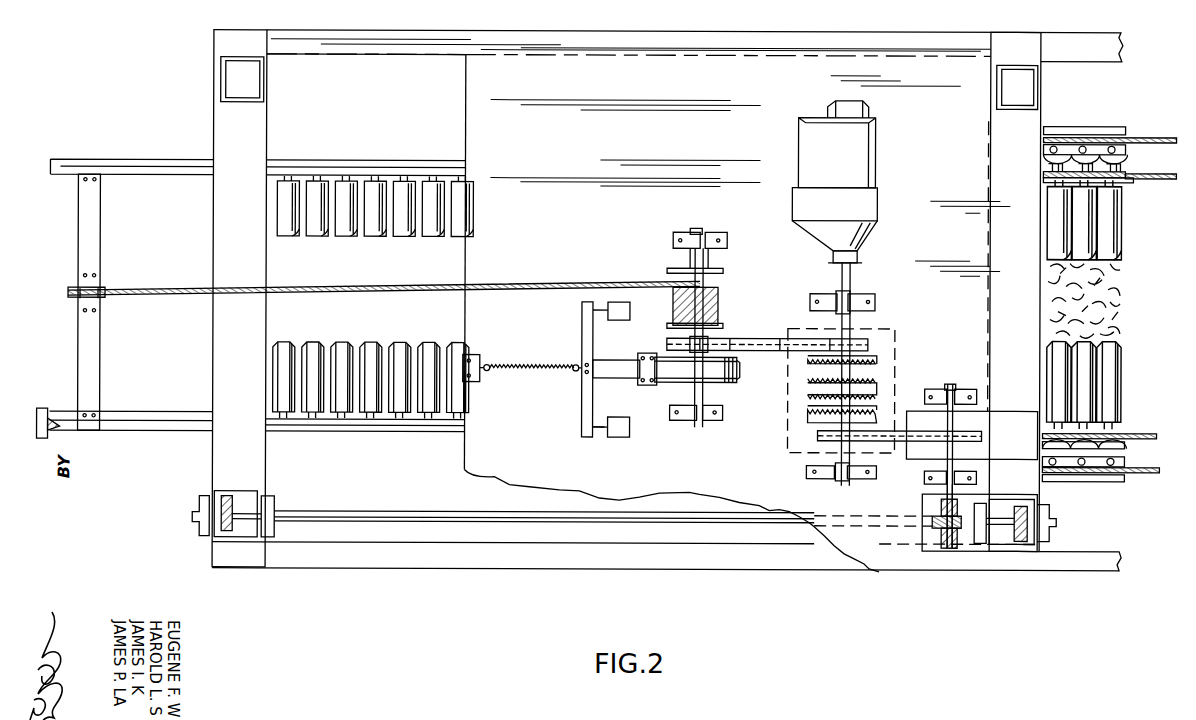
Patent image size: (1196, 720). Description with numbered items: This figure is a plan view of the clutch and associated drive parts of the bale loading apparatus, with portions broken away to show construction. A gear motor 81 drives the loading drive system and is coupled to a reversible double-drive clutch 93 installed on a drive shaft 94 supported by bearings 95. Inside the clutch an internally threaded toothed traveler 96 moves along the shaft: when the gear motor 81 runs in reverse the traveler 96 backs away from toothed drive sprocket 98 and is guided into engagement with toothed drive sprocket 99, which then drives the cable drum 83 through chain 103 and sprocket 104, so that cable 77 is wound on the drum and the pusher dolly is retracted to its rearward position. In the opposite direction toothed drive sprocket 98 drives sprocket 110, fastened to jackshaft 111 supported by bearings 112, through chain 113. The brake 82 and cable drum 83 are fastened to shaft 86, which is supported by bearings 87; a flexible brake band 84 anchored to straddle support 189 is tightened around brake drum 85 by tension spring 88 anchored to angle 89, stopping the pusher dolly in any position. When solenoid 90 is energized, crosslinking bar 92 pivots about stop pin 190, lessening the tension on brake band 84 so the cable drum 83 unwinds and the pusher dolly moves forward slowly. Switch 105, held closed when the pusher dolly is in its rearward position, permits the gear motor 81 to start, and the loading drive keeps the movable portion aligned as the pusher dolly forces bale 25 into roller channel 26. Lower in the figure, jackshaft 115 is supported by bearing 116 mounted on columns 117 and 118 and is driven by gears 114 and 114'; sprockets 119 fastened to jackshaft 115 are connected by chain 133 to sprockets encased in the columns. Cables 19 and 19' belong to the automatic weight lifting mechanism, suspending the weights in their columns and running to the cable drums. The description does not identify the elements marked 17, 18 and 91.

The lower longitudinal rail 17 is at (95, 425).
The upper longitudinal rail 18 is at (174, 167).
The cable 19 is at (1111, 458).
The cable 19' is at (1109, 155).
The bale 25 is at (1121, 294).
The roller channel 26 is at (1117, 328).
The cable 77 is at (518, 286).
The gear motor 81 is at (878, 172).
The brake 82 is at (676, 386).
The cable drum 83 is at (718, 282).
The flexible brake band 84 is at (620, 362).
The brake drum 85 is at (728, 378).
The shaft 86 is at (707, 253).
The bearings 87 is at (711, 234).
The tension spring 88 is at (546, 370).
The angle 89 is at (480, 378).
The solenoid 90 is at (622, 302).
The lower limit switch 91 is at (623, 437).
The crosslinking bar 92 is at (590, 395).
The reversible double-drive clutch 93 is at (790, 448).
The drive shaft 94 is at (852, 318).
The bearings 95 is at (874, 296).
The toothed traveler 96 is at (880, 383).
The toothed drive sprocket 98 is at (880, 410).
The toothed drive sprocket 99 is at (880, 362).
The chain 103 is at (744, 338).
The sprocket 104 is at (712, 338).
The switch 105 is at (47, 412).
The sprocket 110 is at (984, 435).
The jackshaft 111 is at (956, 387).
The bearings 112 is at (978, 394).
The chain 113 is at (918, 505).
The gear 114 is at (935, 551).
The gear 114' is at (922, 531).
The jackshaft 115 is at (370, 503).
The bearing 116 is at (195, 506).
The column 117 is at (218, 482).
The column 118 is at (1037, 497).
The sprockets 119 is at (230, 535).
The chain 133 is at (238, 505).
The straddle support 189 is at (648, 352).
The stop pin 190 is at (582, 428).